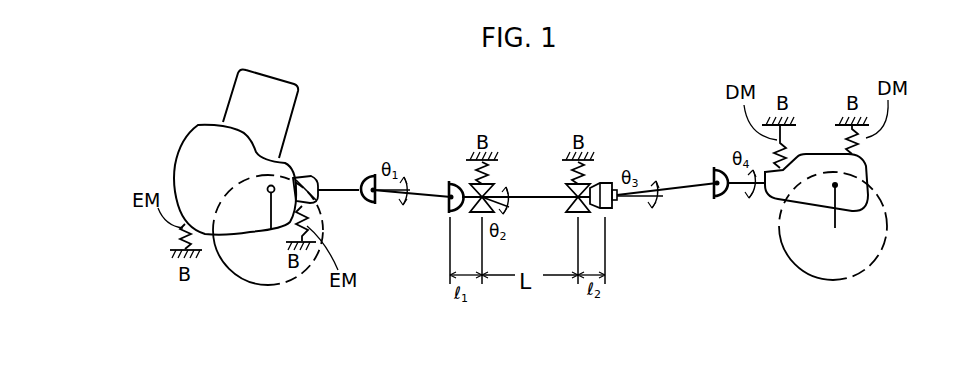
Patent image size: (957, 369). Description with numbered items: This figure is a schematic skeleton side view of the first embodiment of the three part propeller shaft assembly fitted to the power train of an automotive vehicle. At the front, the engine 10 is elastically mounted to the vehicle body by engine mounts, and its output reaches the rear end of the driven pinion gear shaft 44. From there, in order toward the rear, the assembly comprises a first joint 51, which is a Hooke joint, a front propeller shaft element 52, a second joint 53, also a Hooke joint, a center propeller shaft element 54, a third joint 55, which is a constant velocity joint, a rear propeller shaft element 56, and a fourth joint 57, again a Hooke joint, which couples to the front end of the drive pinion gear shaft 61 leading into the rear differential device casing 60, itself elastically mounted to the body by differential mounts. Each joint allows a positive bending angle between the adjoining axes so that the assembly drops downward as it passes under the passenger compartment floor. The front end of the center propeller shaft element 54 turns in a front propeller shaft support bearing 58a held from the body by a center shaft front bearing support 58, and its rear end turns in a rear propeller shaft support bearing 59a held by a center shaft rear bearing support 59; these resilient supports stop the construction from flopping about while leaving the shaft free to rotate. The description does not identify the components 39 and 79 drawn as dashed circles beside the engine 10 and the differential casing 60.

The engine 10 is at (256, 85).
The drive wheel 39 is at (254, 284).
The driven pinion gear shaft 44 is at (333, 184).
The first joint 51 is at (358, 204).
The front propeller shaft element 52 is at (432, 199).
The second joint 53 is at (452, 182).
The center propeller shaft element 54 is at (538, 200).
The third joint 55 is at (617, 209).
The rear propeller shaft element 56 is at (687, 184).
The fourth joint 57 is at (717, 199).
The center shaft front bearing support 58 is at (496, 180).
The front propeller shaft support bearing 58a is at (478, 212).
The center shaft rear bearing support 59 is at (591, 176).
The rear propeller shaft support bearing 59a is at (581, 214).
The rear differential device casing 60 is at (858, 171).
The drive pinion gear shaft 61 is at (760, 192).
The driven wheel 79 is at (797, 268).